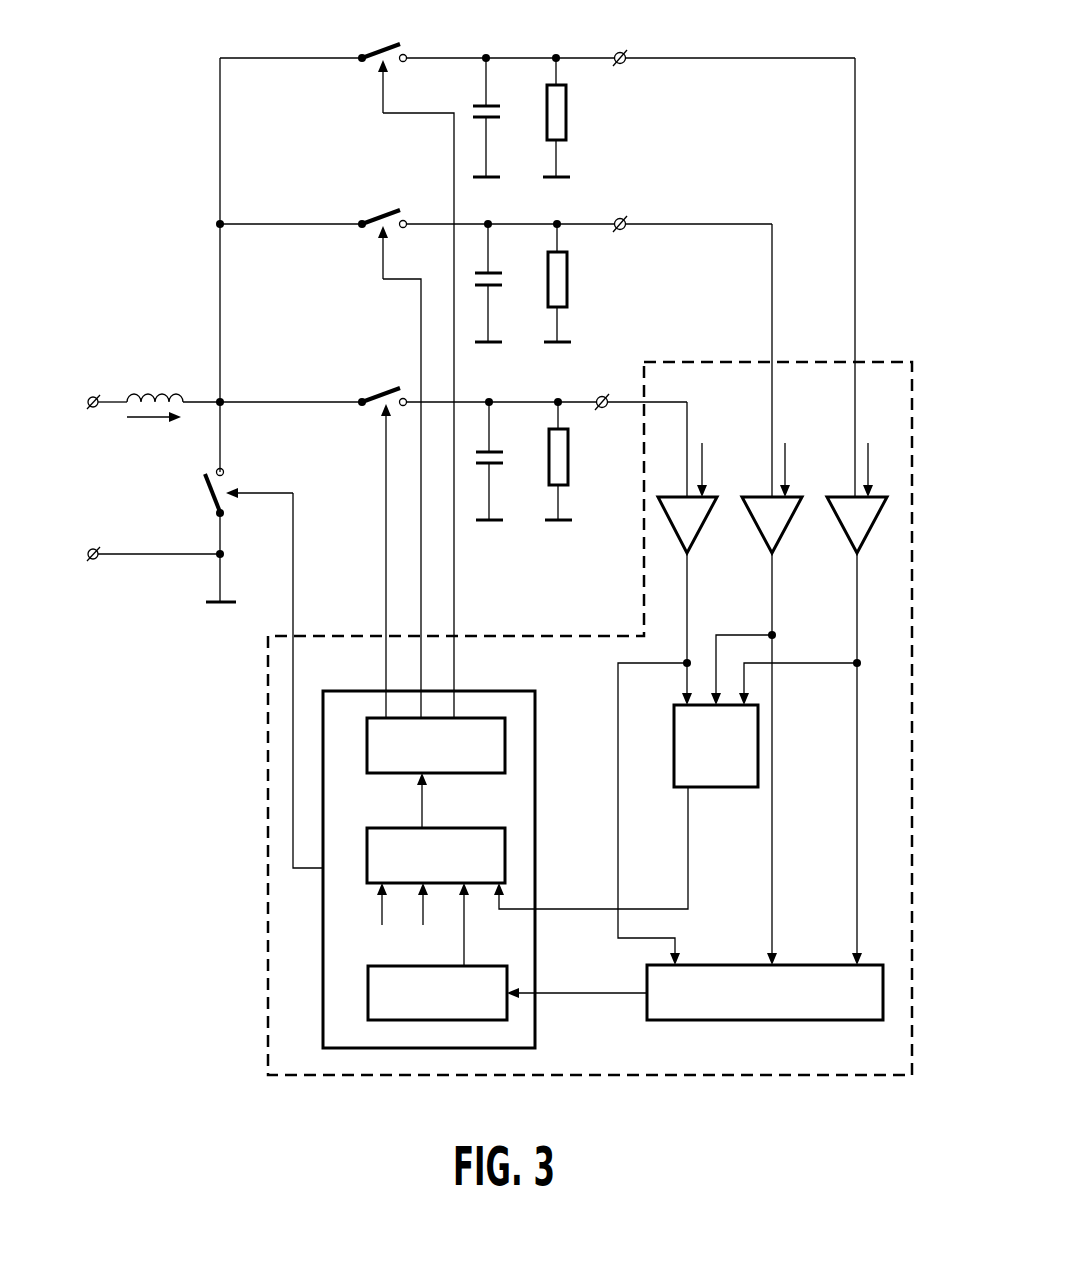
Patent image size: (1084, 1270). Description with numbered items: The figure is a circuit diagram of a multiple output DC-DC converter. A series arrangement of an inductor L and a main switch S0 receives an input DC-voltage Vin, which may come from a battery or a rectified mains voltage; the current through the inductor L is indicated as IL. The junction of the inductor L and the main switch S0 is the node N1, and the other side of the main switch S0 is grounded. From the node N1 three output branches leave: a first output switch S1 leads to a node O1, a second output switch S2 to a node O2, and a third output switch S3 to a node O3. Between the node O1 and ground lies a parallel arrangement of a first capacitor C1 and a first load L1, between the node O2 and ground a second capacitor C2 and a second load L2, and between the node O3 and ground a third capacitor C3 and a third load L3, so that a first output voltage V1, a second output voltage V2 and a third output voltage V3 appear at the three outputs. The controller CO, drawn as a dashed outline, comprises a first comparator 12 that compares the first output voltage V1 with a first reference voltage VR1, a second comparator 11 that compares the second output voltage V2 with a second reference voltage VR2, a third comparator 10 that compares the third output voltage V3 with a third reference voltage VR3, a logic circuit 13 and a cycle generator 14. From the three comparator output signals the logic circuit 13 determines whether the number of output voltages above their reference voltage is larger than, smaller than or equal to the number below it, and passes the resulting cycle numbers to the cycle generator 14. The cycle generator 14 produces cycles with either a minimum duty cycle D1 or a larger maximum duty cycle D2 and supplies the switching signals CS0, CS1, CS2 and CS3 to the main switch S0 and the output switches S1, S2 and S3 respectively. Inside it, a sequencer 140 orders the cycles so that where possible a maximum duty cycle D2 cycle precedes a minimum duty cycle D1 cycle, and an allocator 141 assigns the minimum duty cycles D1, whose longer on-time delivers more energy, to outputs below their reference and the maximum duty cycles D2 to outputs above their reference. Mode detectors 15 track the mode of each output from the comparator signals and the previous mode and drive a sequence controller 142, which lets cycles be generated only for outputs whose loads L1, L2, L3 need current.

The node N1 is at (237, 265).
The input DC-voltage Vin is at (160, 498).
The inductor L is at (159, 392).
The inductor current IL is at (154, 431).
The main switch S0 is at (197, 493).
The switching signal CS0 is at (274, 668).
The first output switch S1 is at (537, 39).
The switching signal CS1 is at (416, 389).
The second output switch S2 is at (496, 205).
The switching signal CS2 is at (409, 472).
The third output switch S3 is at (522, 383).
The switching signal CS3 is at (365, 561).
The first capacitor C1 is at (500, 114).
The first load L1 is at (566, 113).
The second capacitor C2 is at (502, 281).
The second load L2 is at (567, 280).
The third capacitor C3 is at (503, 459).
The third load L3 is at (568, 458).
The node O1 is at (620, 43).
The first output voltage V1 is at (759, 260).
The node O2 is at (620, 209).
The second output voltage V2 is at (718, 343).
The node O3 is at (602, 388).
The third output voltage V3 is at (675, 437).
The first reference voltage VR1 is at (879, 456).
The second reference voltage VR2 is at (795, 456).
The third reference voltage VR3 is at (710, 456).
The third comparator 10 is at (700, 577).
The second comparator 11 is at (785, 577).
The first comparator 12 is at (884, 600).
The logic circuit 13 is at (674, 770).
The cycle generator 14 is at (466, 1048).
The mode detectors 15 is at (809, 965).
The sequencer 140 is at (505, 852).
The allocator 141 is at (505, 740).
The sequence controller 142 is at (507, 977).
The minimum duty cycle D1 is at (381, 921).
The maximum duty cycle D2 is at (423, 921).
The controller CO is at (267, 838).